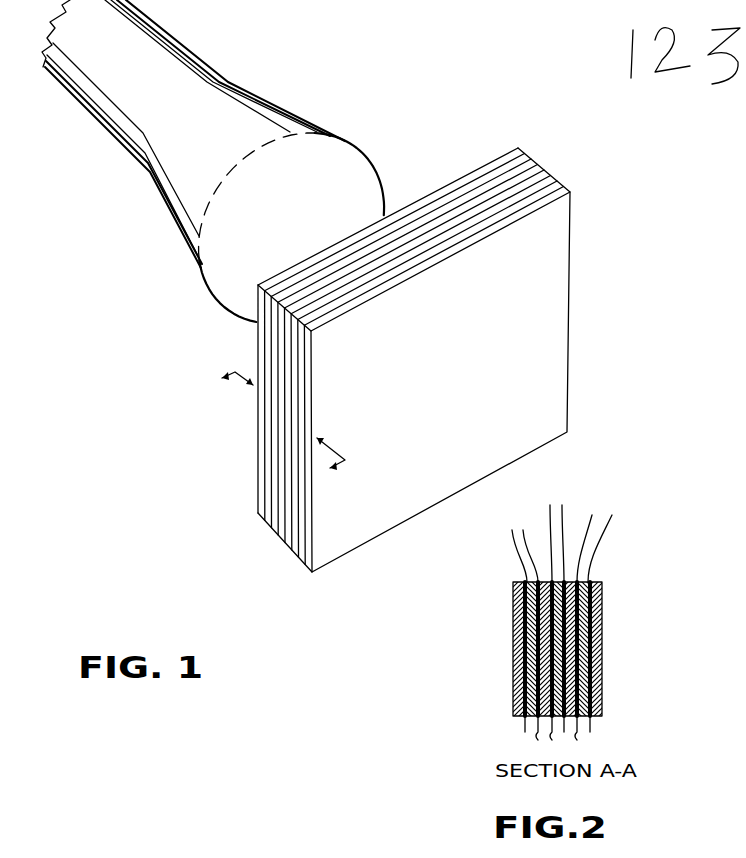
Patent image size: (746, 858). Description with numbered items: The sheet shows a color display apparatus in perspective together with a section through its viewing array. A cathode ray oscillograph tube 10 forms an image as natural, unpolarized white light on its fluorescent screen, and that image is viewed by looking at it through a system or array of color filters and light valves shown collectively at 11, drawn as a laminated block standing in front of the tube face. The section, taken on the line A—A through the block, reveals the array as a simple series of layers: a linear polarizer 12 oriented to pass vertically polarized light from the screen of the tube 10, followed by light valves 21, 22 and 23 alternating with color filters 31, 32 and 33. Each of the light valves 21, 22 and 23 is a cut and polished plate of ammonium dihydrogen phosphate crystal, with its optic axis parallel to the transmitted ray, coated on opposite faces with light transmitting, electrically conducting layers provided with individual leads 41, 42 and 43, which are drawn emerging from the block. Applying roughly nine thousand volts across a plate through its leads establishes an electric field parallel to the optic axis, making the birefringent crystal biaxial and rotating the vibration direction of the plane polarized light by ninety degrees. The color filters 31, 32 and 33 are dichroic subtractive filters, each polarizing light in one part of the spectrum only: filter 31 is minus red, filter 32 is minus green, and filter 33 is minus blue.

In FIG. 1, the cathode ray oscillograph tube 10 is at (218, 262).
In FIG. 1, the array of color filters and light valves 11 is at (247, 523).
In FIG. 2, the linear polarizer 12 is at (517, 718).
In FIG. 2, the light valve 21 is at (533, 668).
In FIG. 2, the light valve 22 is at (560, 668).
In FIG. 2, the light valve 23 is at (586, 668).
In FIG. 2, the color filter 31 is at (525, 733).
In FIG. 2, the color filter 32 is at (588, 733).
In FIG. 2, the color filter 33 is at (599, 718).
In FIG. 2, the leads 41 is at (528, 508).
In FIG. 2, the leads 42 is at (572, 497).
In FIG. 2, the leads 43 is at (620, 513).